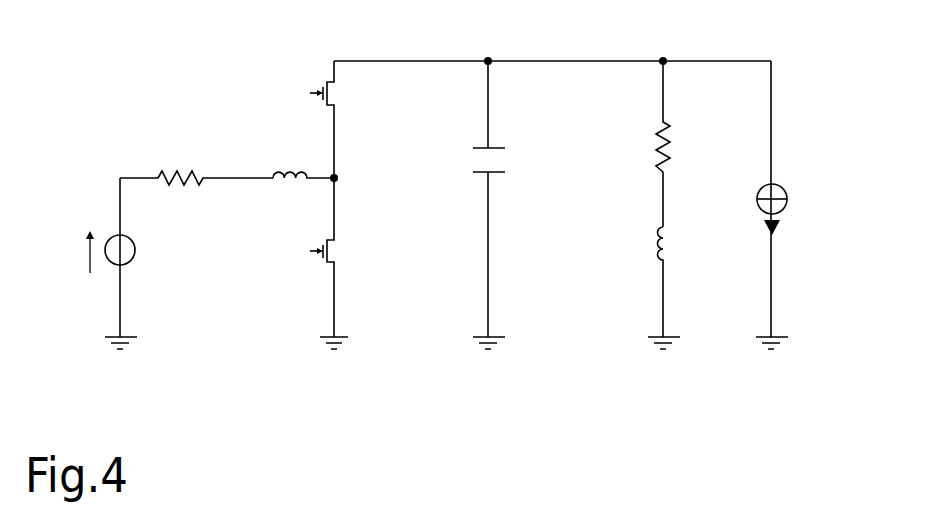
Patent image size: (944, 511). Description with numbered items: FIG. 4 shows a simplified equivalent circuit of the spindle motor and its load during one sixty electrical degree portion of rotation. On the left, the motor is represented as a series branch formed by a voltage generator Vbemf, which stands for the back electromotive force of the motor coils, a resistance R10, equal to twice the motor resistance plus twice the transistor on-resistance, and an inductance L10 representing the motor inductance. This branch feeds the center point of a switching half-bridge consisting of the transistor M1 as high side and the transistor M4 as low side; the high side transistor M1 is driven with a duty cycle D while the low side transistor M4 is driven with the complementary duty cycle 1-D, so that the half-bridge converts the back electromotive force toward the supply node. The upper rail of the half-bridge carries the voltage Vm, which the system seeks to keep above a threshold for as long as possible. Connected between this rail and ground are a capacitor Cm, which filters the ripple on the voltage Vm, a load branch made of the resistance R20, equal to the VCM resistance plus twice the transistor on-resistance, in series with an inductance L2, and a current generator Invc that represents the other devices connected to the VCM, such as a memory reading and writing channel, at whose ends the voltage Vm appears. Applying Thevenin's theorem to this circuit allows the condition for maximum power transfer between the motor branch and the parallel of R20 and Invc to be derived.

The voltage Vm is at (552, 40).
The transistor M1 is at (355, 119).
The transistor M4 is at (353, 263).
The duty cycle D is at (303, 94).
The duty cycle 1-D is at (291, 252).
The voltage generator Vbemf is at (152, 263).
The resistance R10 is at (212, 160).
The inductance L10 is at (303, 156).
The capacitor Cm is at (515, 205).
The resistance R20 is at (693, 144).
The load inductance L2 is at (685, 288).
The current generator Invc is at (797, 205).